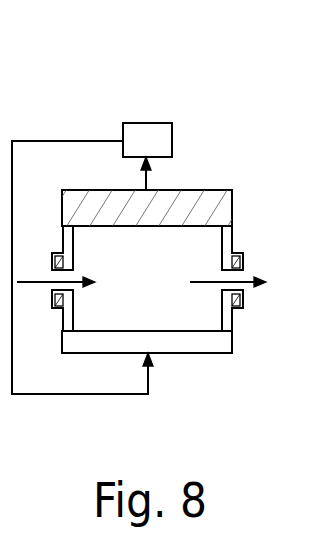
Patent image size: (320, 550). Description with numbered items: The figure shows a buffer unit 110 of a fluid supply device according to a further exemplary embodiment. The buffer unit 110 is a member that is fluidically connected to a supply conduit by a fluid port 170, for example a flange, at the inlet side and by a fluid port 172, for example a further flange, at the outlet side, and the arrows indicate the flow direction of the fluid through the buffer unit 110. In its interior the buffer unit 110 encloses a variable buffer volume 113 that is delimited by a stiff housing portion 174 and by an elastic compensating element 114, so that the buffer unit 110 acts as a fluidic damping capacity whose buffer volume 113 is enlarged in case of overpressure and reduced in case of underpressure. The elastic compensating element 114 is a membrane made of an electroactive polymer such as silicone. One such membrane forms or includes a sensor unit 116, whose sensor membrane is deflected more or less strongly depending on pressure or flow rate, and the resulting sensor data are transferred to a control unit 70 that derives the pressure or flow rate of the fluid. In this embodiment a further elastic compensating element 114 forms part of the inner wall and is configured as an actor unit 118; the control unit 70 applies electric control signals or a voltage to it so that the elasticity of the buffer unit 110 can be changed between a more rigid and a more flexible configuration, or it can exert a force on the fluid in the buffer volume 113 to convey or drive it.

The buffer unit 110 is at (194, 136).
The control unit 70 is at (147, 156).
The elastic compensating element 114 is at (203, 203).
The sensor unit 116 is at (107, 200).
The buffer volume 113 is at (180, 310).
The fluid port 170 is at (62, 258).
The fluid port 172 is at (238, 257).
The housing portion 174 is at (218, 233).
The actor unit 118 is at (93, 350).